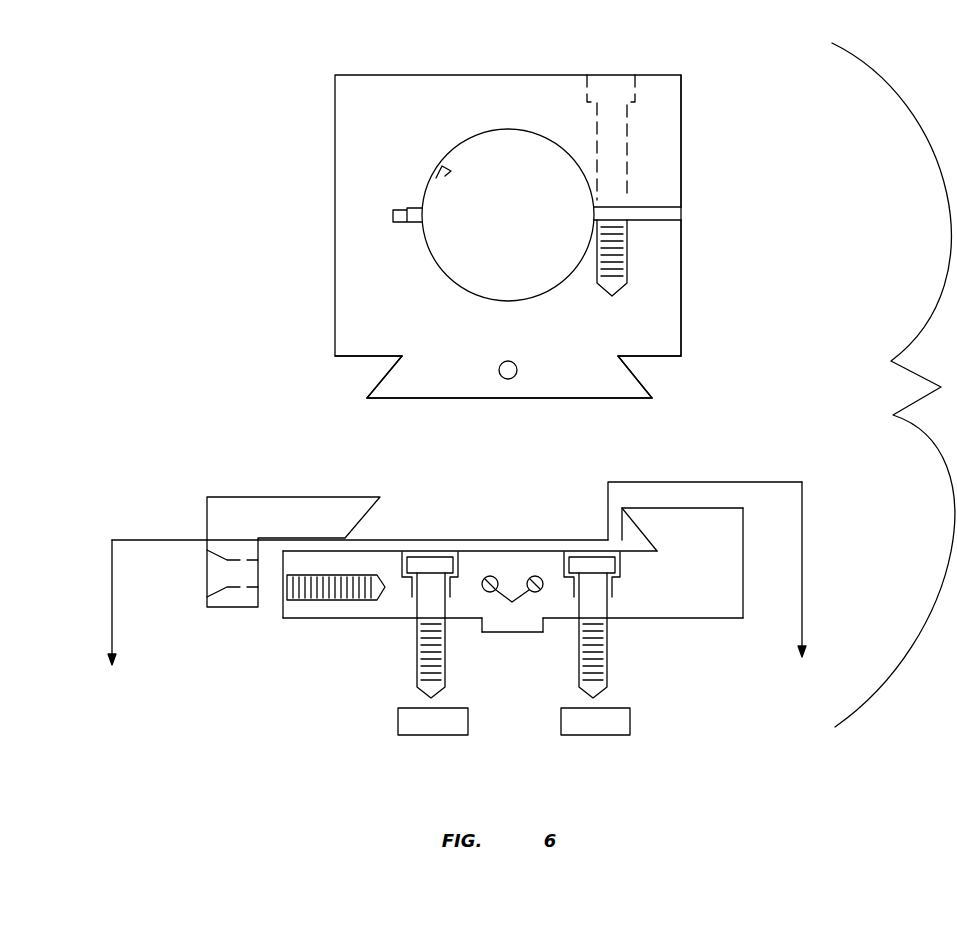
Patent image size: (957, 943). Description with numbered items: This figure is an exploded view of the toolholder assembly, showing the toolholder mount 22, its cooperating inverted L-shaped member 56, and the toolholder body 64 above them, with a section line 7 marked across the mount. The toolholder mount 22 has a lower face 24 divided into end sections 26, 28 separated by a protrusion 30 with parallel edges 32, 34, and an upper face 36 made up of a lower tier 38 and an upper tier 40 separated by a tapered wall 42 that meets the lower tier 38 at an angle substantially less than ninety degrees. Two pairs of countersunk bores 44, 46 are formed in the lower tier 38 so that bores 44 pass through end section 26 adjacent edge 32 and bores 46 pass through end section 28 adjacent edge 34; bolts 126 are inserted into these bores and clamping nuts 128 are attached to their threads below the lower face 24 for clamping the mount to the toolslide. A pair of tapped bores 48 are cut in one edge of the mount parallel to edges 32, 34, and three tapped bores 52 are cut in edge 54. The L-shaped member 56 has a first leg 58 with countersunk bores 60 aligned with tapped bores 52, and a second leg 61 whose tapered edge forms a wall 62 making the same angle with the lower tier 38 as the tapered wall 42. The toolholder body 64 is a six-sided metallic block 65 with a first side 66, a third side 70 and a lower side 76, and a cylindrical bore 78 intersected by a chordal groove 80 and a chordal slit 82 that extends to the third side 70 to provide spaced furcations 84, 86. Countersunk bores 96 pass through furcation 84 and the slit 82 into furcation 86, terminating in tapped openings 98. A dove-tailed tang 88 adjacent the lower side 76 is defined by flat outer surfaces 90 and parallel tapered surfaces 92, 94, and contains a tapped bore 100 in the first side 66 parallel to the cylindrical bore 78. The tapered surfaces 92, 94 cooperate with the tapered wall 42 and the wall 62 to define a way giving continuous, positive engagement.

The section line 7- 7 is at (454, 590).
The toolholder mount 22 is at (710, 469).
The lower face 24 is at (714, 630).
The end section 26 is at (375, 622).
The end section 28 is at (683, 618).
The protrusion 30 is at (522, 635).
The edge 32 is at (482, 627).
The edge 34 is at (545, 627).
The upper face 36 is at (543, 526).
The lower tier 38 is at (473, 550).
The upper tier 40 is at (710, 508).
The tapered wall 42 is at (630, 520).
The countersunk bores 44 is at (433, 551).
The countersunk bores 46 is at (590, 551).
The tapped bores 48 is at (512, 603).
The tapped bores 52 is at (330, 598).
The edge 54 is at (285, 620).
The inverted L-shaped member 56 is at (201, 482).
The first leg 58 is at (207, 521).
The countersunk bores 60 is at (220, 571).
The second leg 61 is at (253, 497).
The wall 62 is at (363, 518).
The toolholder body 64 is at (312, 88).
The metallic block 65 is at (521, 113).
The first side 66 is at (395, 290).
The third side 70 is at (681, 128).
The lower side 76 is at (560, 398).
The cylindrical bore 78 is at (441, 168).
The chordal groove 80 is at (403, 207).
The chordal slit 82 is at (672, 212).
The furcation 84 is at (681, 170).
The furcation 86 is at (681, 268).
The dove-tailed tang 88 is at (457, 380).
The flat outer surfaces 90 is at (350, 357).
The tapered surface 92 is at (368, 377).
The tapered surface 94 is at (635, 375).
The countersunk bores 96 is at (633, 93).
The tapped opening 98 is at (620, 285).
The tapped bore 100 is at (516, 378).
The bolts 126 is at (415, 669).
The clamping nuts 128 is at (457, 735).